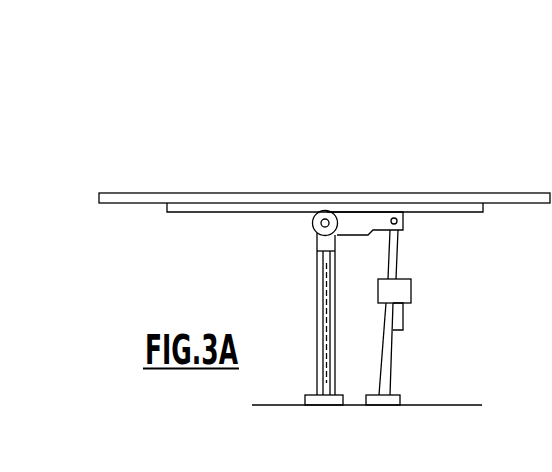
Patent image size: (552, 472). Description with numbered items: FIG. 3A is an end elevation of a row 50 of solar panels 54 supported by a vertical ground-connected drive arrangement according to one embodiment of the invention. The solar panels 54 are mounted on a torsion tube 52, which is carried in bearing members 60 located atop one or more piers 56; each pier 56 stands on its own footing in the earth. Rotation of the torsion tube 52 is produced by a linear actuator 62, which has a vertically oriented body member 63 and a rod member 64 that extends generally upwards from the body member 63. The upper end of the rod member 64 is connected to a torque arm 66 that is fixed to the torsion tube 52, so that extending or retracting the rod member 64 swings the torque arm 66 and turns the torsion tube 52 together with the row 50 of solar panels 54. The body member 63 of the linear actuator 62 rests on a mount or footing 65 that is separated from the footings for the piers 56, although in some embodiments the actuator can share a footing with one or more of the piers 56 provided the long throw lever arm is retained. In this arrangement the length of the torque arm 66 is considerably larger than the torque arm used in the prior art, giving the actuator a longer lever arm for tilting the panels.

The row of solar panels 50 is at (239, 285).
The torsion tube 52 is at (321, 211).
The solar panels 54 is at (190, 193).
The pier 56 is at (316, 320).
The bearing member 60 is at (312, 226).
The linear actuator 62 is at (477, 320).
The body member 63 is at (392, 346).
The rod member 64 is at (397, 253).
The mount or footing 65 is at (400, 397).
The torque arm 66 is at (373, 212).